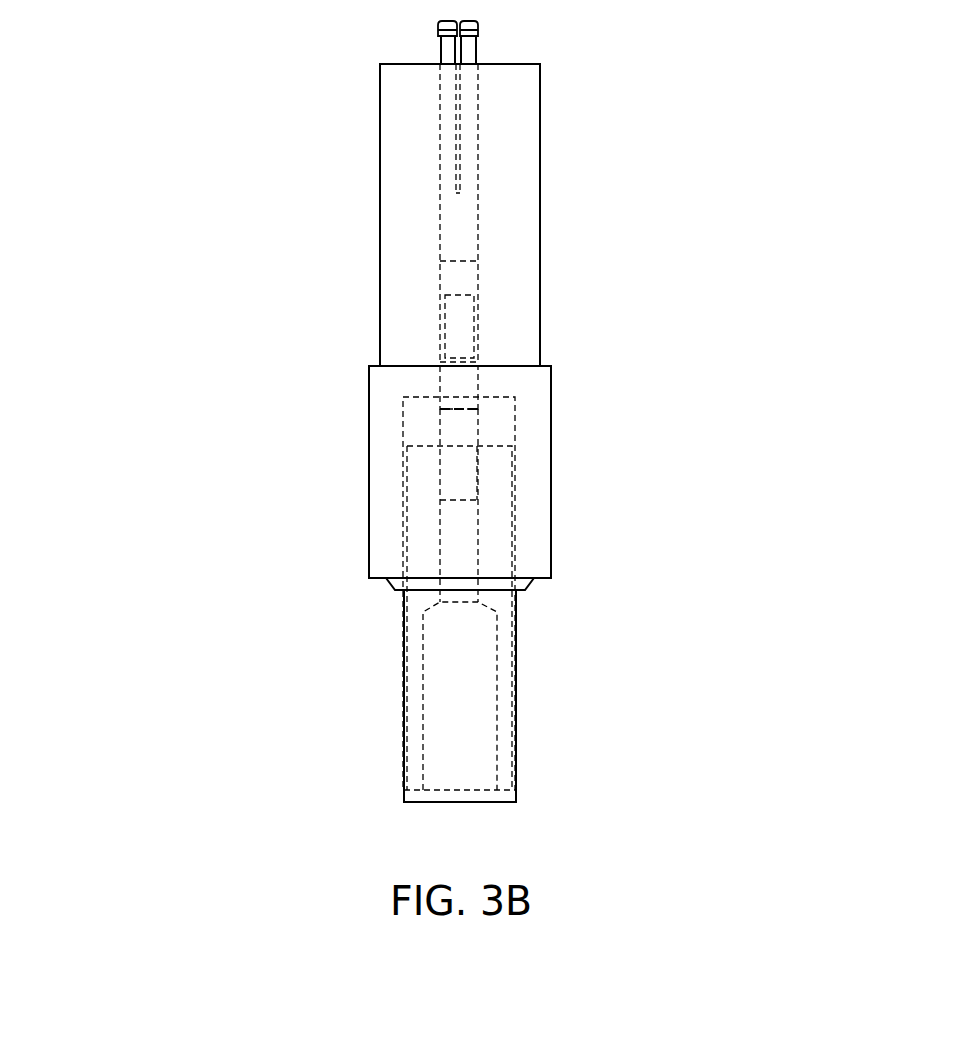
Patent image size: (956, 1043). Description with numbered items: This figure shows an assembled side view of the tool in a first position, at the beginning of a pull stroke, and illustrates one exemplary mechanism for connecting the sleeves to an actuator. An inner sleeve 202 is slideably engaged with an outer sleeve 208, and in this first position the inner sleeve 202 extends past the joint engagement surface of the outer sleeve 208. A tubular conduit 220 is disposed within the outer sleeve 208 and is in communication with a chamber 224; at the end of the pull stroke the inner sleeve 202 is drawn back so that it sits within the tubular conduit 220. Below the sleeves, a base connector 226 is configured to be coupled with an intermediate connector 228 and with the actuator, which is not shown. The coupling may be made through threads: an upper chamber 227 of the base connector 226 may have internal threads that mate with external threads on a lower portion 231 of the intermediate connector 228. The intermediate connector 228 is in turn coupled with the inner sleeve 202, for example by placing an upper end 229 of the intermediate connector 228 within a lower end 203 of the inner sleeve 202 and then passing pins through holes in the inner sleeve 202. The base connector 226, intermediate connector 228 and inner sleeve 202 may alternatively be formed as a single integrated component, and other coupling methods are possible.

The inner sleeve 202 is at (478, 51).
The lower end of inner sleeve 203 is at (462, 281).
The outer sleeve 208 is at (378, 137).
The tubular conduit 220 is at (440, 262).
The chamber 224 is at (403, 412).
The base connector 226 is at (516, 713).
The upper chamber of base connector 227 is at (477, 553).
The intermediate connector 228 is at (465, 382).
The upper end of intermediate connector 229 is at (455, 299).
The lower portion of intermediate connector 231 is at (448, 502).